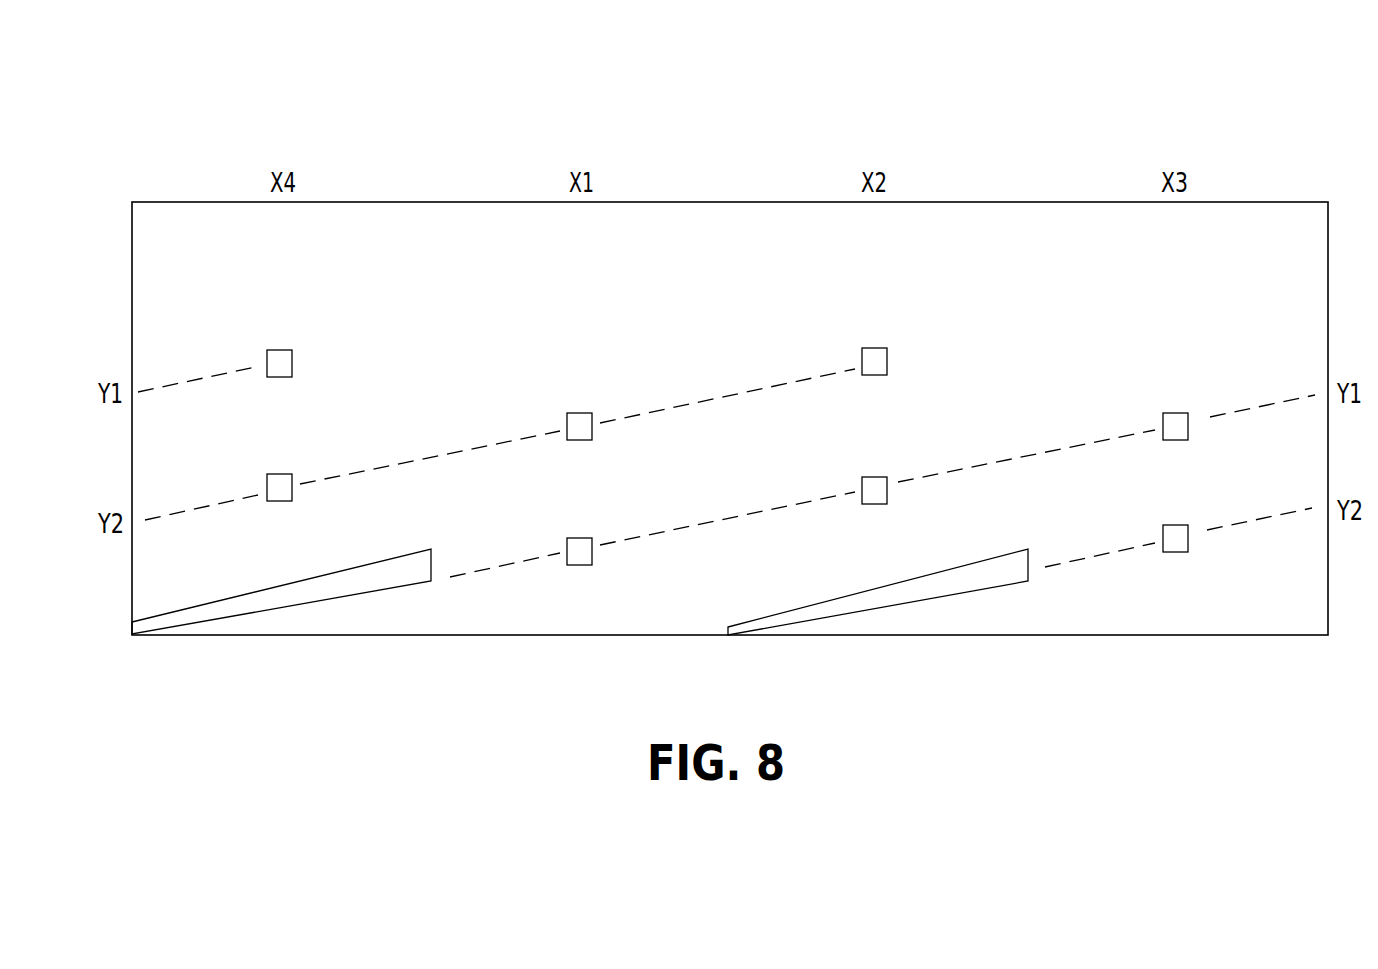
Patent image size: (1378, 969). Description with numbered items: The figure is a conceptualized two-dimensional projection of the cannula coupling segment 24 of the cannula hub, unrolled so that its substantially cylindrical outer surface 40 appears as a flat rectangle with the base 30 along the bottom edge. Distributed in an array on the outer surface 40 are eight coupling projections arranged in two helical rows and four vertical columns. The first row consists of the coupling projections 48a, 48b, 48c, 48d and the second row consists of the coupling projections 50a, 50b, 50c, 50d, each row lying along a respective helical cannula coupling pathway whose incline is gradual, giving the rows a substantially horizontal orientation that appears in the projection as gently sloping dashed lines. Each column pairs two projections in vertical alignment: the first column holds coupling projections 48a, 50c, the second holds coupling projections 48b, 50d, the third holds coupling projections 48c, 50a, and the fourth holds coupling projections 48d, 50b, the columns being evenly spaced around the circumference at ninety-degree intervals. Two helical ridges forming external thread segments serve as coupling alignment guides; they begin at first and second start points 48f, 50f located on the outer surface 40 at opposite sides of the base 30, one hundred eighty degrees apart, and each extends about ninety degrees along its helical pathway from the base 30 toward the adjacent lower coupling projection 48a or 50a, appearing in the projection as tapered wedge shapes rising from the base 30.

The cannula coupling segment 24 is at (196, 97).
The base 30 is at (1250, 635).
The outer surface 40 is at (735, 264).
The coupling projection 48a is at (580, 538).
The coupling projection 48b is at (875, 477).
The coupling projection 48c is at (1177, 413).
The coupling projection 48d is at (282, 350).
The first start point 48f is at (132, 628).
The coupling projection 50a is at (1177, 525).
The coupling projection 50b is at (278, 474).
The coupling projection 50c is at (580, 413).
The coupling projection 50d is at (875, 348).
The second start point 50f is at (722, 634).